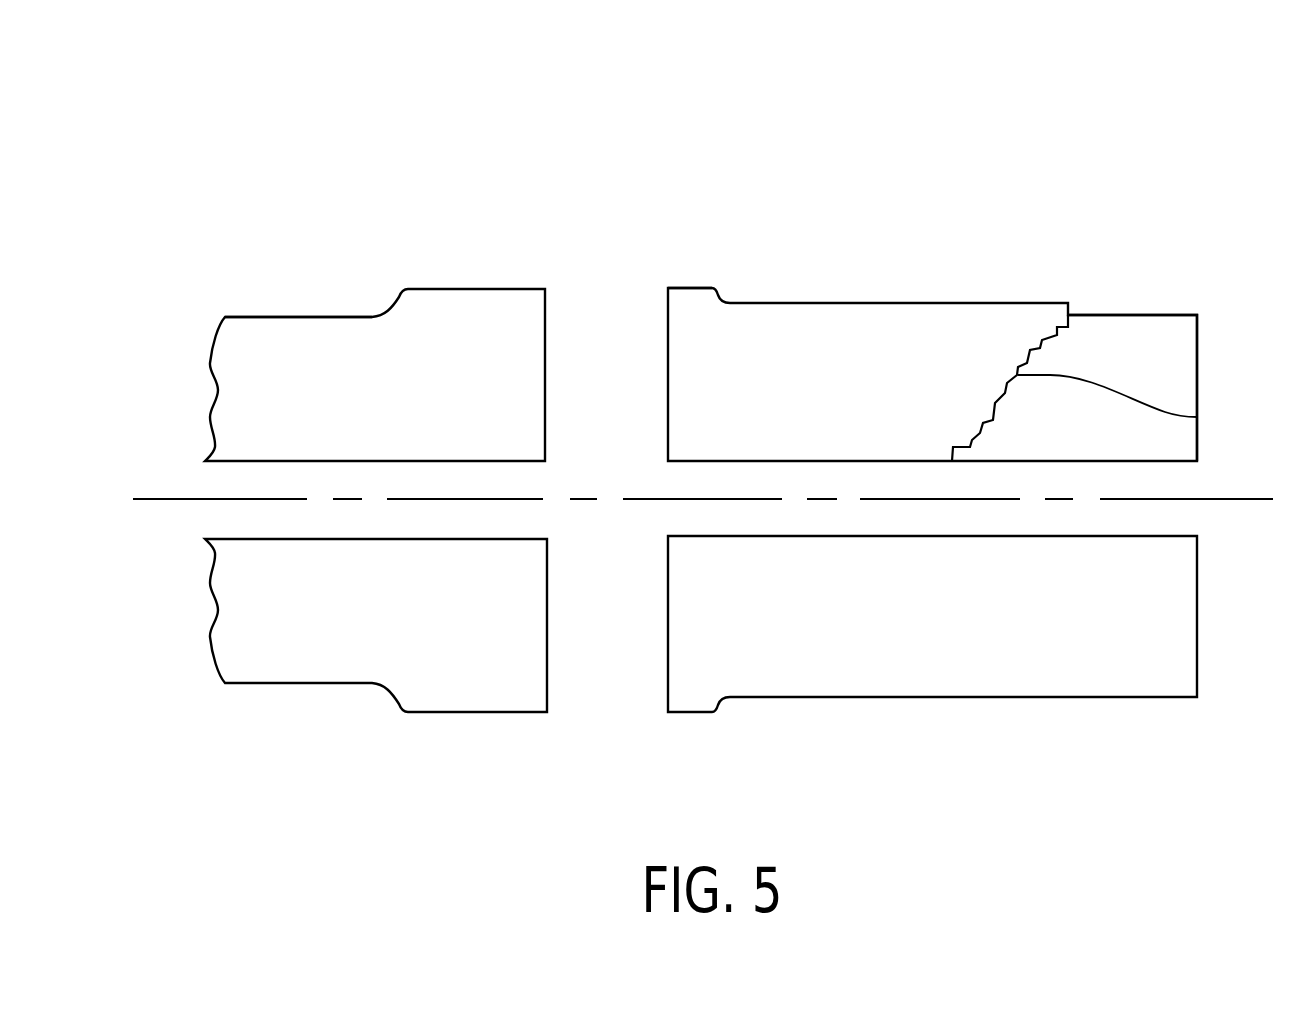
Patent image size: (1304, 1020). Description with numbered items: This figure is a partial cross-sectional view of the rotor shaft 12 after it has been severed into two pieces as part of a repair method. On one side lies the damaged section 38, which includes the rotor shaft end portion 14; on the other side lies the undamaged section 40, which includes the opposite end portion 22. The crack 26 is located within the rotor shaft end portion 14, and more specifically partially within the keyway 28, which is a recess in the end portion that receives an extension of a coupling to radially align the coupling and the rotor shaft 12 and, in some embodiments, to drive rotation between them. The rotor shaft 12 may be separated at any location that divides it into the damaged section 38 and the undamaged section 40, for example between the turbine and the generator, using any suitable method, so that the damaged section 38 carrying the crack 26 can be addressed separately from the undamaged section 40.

The rotor shaft 12 is at (681, 152).
The rotor shaft end portion 14 is at (1155, 342).
The end portion 22 is at (252, 330).
The crack 26 is at (1197, 417).
The keyway 28 is at (1157, 313).
The damaged section 38 is at (827, 400).
The undamaged section 40 is at (373, 405).